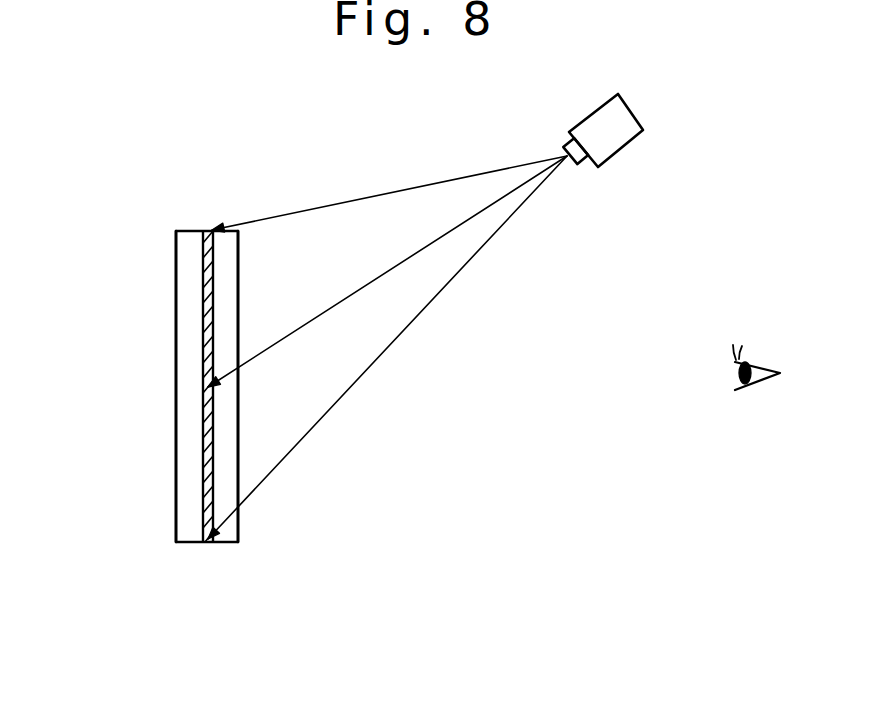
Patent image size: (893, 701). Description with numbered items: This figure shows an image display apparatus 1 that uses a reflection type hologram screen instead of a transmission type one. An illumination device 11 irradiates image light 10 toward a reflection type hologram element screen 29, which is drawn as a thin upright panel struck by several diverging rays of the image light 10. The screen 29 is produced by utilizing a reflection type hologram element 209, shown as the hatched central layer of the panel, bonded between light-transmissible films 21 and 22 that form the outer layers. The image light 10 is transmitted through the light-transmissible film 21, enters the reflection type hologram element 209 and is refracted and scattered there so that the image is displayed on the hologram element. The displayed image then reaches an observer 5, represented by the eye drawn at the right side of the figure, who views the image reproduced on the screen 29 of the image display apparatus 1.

The image display apparatus 1 is at (393, 171).
The observer 5 is at (760, 418).
The image light 10 is at (370, 380).
The illumination device 11 is at (608, 140).
The light-transmissible film 21 is at (223, 438).
The light-transmissible film 22 is at (188, 515).
The reflection type hologram element screen 29 is at (159, 347).
The reflection type hologram element 209 is at (207, 474).